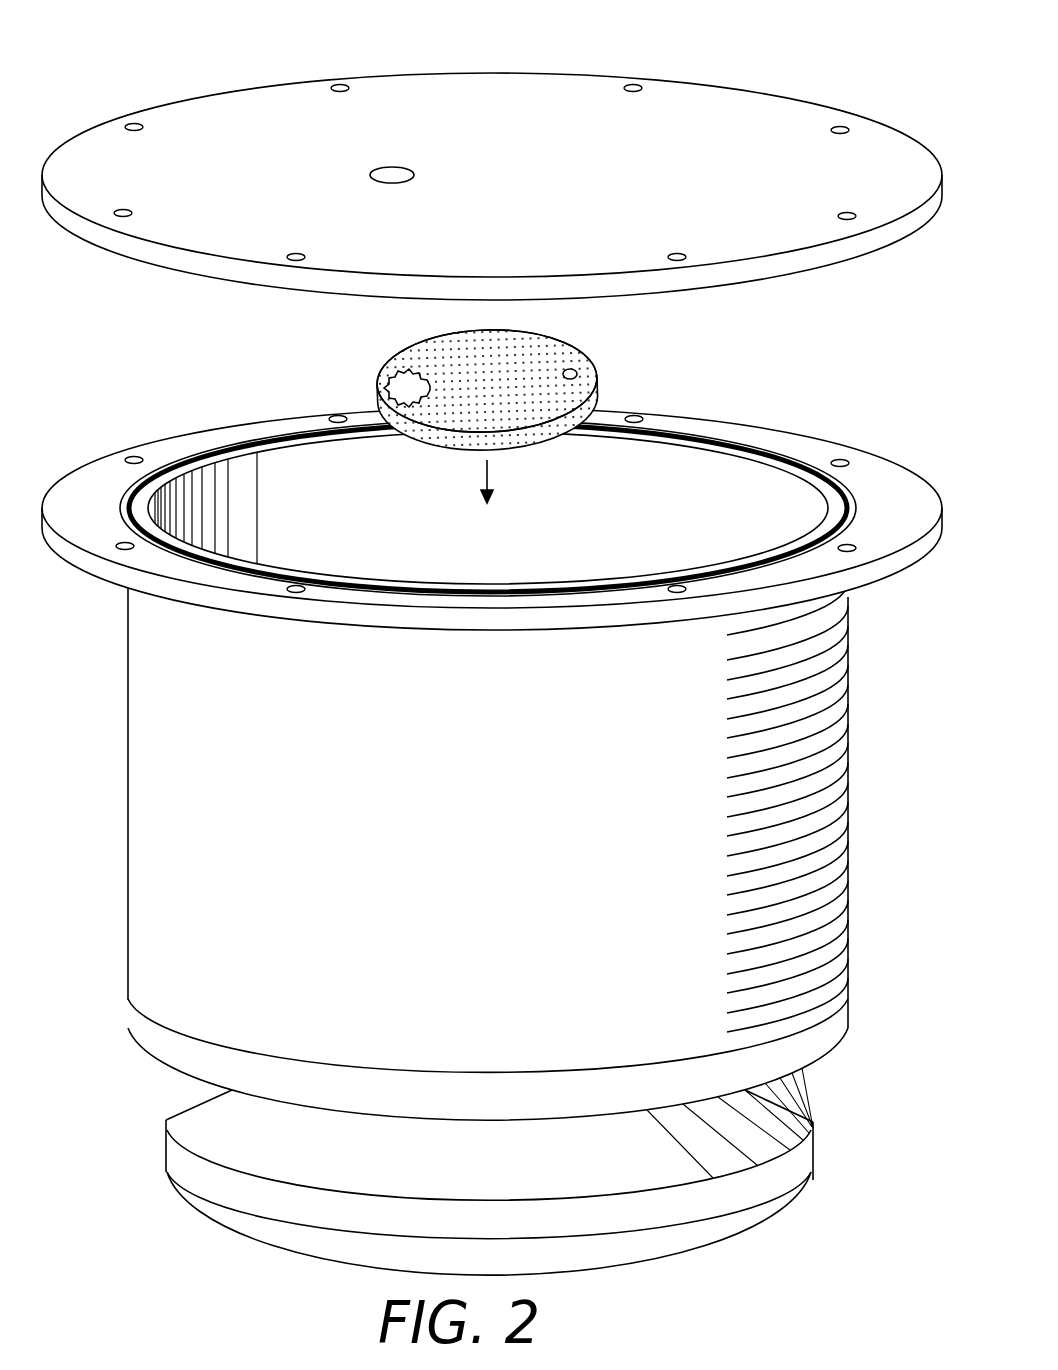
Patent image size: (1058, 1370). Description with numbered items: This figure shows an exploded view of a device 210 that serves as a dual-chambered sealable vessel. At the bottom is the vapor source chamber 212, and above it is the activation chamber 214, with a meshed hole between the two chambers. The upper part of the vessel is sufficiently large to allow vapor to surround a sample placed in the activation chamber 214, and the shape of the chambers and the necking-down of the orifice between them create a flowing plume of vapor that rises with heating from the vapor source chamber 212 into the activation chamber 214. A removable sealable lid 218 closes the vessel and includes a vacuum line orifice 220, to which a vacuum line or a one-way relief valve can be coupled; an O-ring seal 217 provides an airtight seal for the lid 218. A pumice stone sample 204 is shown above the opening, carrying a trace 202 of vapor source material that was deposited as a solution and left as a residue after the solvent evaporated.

The device 210 is at (886, 26).
The vapor source chamber 212 is at (790, 1172).
The activation chamber 214 is at (813, 1040).
The O-ring seal 217 is at (752, 448).
The sealable lid 218 is at (492, 175).
The vacuum line orifice 220 is at (410, 167).
The pumice stone sample 204 is at (491, 380).
The trace 202 is at (395, 383).